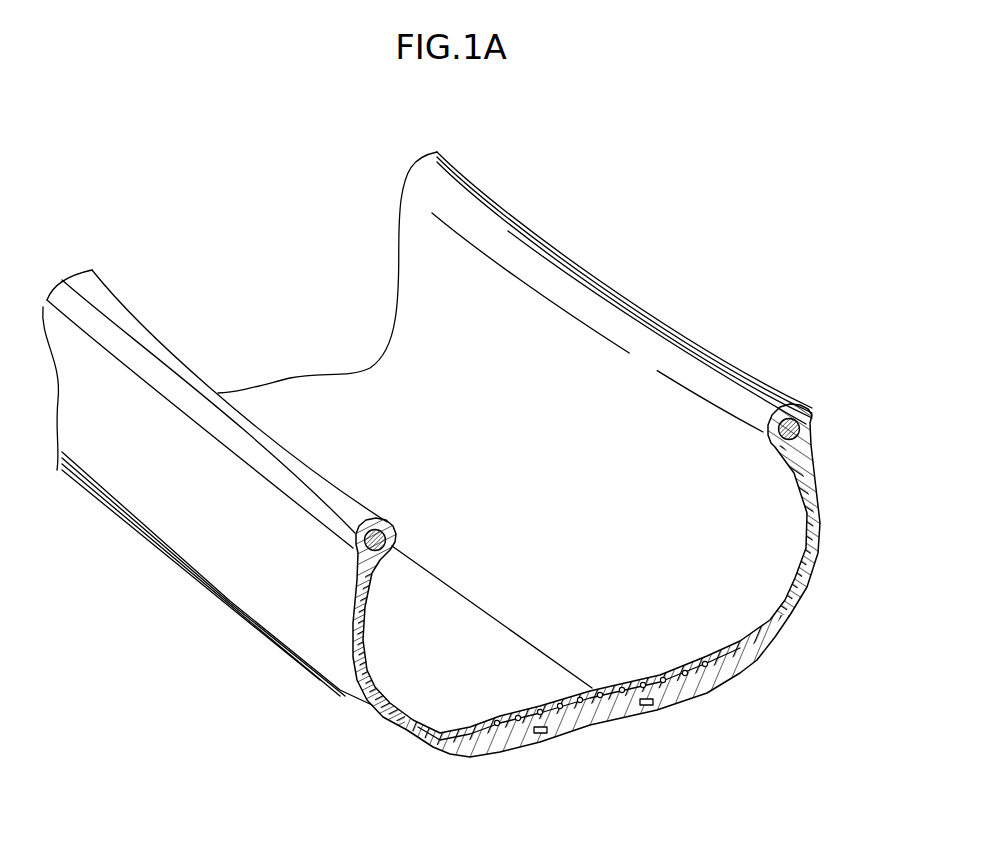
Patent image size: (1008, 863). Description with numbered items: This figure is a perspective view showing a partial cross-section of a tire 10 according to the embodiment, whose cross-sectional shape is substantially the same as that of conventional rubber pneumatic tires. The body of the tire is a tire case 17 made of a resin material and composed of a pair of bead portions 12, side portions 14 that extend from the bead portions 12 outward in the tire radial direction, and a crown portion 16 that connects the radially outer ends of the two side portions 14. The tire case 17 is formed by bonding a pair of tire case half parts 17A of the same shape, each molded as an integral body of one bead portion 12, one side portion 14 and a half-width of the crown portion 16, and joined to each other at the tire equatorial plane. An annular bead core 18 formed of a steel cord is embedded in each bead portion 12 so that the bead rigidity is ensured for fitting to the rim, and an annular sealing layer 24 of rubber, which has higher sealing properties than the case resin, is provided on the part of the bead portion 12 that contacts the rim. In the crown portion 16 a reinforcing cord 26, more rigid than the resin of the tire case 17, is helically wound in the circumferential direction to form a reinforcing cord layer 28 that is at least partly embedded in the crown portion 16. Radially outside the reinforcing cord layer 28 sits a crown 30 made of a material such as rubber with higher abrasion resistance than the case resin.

The tire 10 is at (656, 262).
The bead portion 12 is at (777, 399).
The side portion 14 is at (303, 607).
The crown portion 16 is at (687, 686).
The tire case 17 is at (446, 583).
The tire case half part 17A is at (457, 638).
The bead core 18 is at (394, 537).
The sealing layer 24 is at (293, 488).
The reinforcing cord 26 is at (522, 720).
The reinforcing cord layer 28 is at (561, 711).
The crown 30 is at (733, 680).